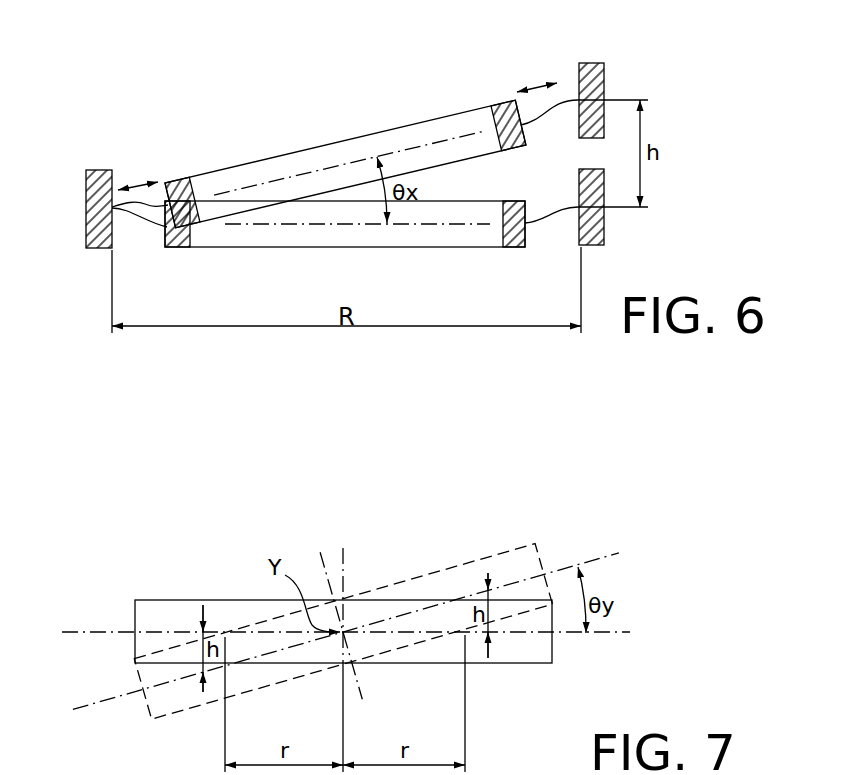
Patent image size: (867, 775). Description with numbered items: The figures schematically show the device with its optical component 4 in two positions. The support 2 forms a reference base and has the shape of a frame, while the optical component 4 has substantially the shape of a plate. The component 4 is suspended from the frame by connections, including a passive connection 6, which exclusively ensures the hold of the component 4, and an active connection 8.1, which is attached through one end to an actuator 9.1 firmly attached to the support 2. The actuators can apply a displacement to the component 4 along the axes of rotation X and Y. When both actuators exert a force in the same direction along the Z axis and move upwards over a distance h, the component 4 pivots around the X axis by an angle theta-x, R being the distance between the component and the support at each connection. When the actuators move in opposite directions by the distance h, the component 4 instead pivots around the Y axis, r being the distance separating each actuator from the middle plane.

In FIG. 6, the support 2 is at (98, 165).
In FIG. 6, the optical component 4 is at (290, 248).
In FIG. 7, the optical component 4 is at (520, 655).
In FIG. 6, the passive connection 6 is at (138, 232).
In FIG. 6, the active connection 8.1 is at (565, 82).
In FIG. 6, the actuator 9.1 is at (597, 57).